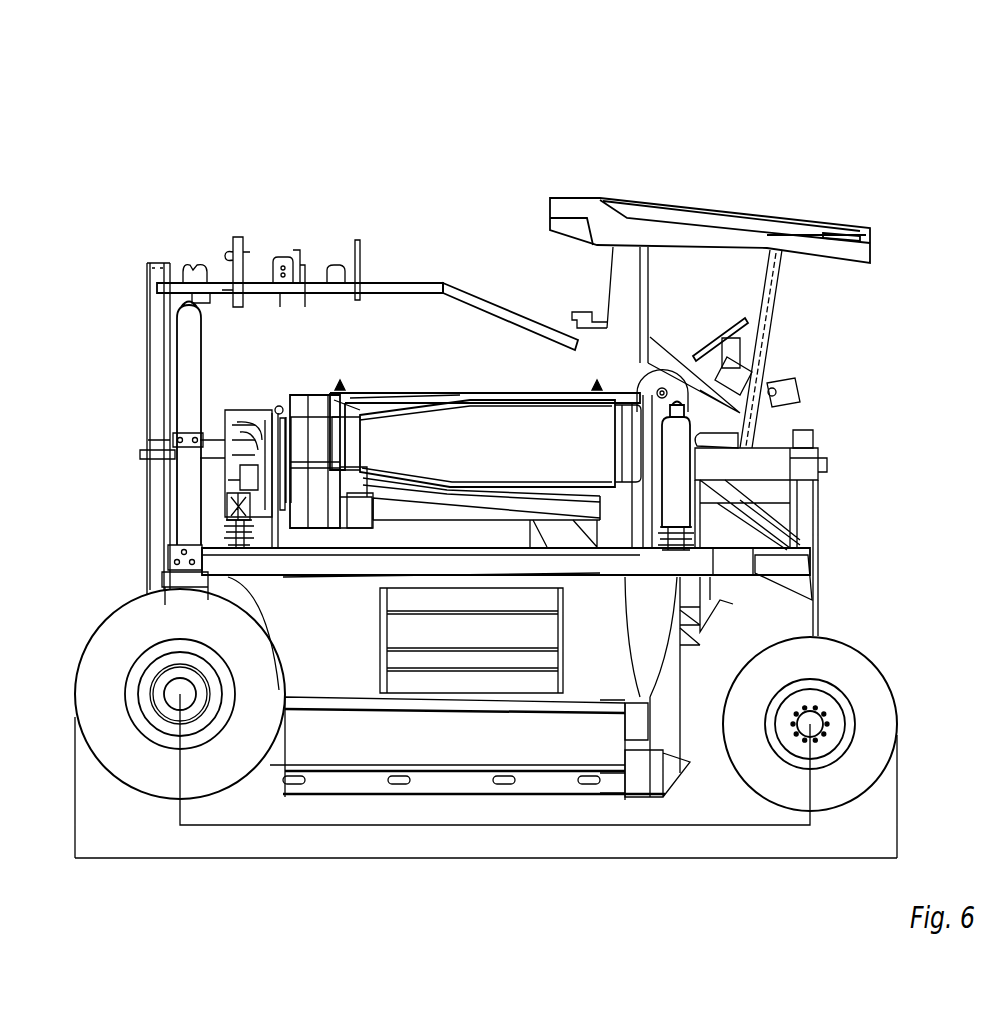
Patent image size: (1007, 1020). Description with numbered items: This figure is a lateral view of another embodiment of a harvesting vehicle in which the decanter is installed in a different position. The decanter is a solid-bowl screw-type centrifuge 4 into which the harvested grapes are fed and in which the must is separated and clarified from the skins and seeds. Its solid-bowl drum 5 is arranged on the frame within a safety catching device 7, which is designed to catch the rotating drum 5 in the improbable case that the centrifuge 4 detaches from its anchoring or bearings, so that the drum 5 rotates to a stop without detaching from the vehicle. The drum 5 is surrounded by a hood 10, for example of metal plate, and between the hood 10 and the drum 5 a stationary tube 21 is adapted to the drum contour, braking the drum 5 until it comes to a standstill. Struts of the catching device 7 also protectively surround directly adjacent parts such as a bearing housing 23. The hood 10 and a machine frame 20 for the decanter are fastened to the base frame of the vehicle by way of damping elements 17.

The solid-bowl screw-type centrifuge 4 is at (505, 386).
The solid-bowl drum 5 is at (418, 386).
The safety catching device 7 is at (528, 390).
The hood 10 is at (387, 386).
The tube 21 is at (464, 386).
The bearing housing 23 is at (280, 390).
The damping elements 17 is at (222, 533).
The machine frame 20 is at (272, 520).